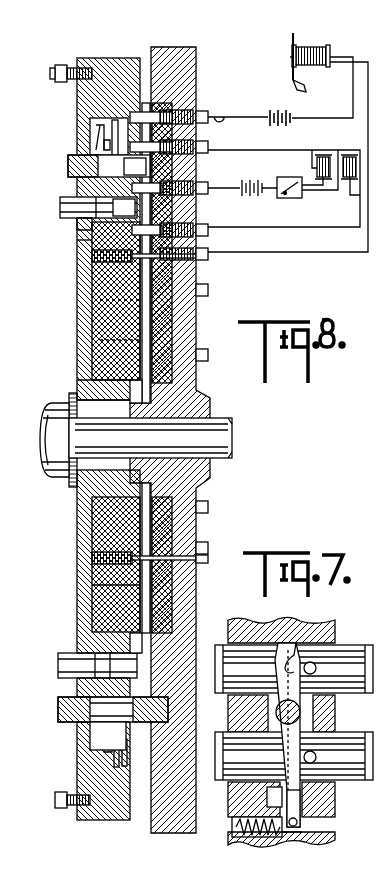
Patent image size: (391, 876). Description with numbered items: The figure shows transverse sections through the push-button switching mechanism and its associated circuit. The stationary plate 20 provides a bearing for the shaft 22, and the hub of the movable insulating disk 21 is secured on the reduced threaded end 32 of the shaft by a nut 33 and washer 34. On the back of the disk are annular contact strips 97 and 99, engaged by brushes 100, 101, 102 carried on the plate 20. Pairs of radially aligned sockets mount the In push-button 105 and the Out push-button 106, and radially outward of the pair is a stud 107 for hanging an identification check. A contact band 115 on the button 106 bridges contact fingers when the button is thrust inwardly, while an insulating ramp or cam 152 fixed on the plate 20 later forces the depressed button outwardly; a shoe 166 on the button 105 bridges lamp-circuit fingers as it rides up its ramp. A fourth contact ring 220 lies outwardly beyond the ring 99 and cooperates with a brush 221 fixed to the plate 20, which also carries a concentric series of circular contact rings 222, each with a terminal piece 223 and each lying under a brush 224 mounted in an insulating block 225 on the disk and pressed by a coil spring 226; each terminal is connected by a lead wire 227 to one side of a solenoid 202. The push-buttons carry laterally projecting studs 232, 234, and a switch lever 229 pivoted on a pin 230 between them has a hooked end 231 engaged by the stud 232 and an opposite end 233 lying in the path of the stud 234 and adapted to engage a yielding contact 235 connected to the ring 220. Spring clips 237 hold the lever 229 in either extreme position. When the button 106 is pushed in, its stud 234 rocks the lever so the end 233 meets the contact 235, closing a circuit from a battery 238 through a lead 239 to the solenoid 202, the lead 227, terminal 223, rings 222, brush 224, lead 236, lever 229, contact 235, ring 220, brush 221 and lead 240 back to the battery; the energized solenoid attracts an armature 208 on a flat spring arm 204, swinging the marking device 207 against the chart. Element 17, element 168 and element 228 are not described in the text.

In FIG. 8, the lower housing block 17 is at (72, 645).
In FIG. 8, the stationary plate 20 is at (197, 333).
In FIG. 8, the movable disk 21 is at (80, 356).
In FIG. 8, the shaft 22 is at (213, 433).
In FIG. 8, the reduced threaded end 32 is at (87, 431).
In FIG. 8, the nut 33 is at (50, 419).
In FIG. 8, the washer 34 is at (68, 399).
In FIG. 8, the annular contact strip 97 is at (80, 248).
In FIG. 8, the annular contact strip 99 is at (98, 128).
In FIG. 8, the brush 100 is at (208, 251).
In FIG. 8, the brush 101 is at (207, 190).
In FIG. 8, the brush 102 is at (199, 157).
In FIG. 8, the In push-button 105 is at (68, 222).
In FIG. 7, the In push-button 105 is at (367, 646).
In FIG. 8, the Out push-button 106 is at (68, 167).
In FIG. 7, the Out push-button 106 is at (368, 745).
In FIG. 8, the stud 107 is at (62, 65).
In FIG. 8, the contact band 115 is at (135, 166).
In FIG. 8, the ramp or cam 152 is at (172, 672).
In FIG. 8, the shoe 166 is at (206, 229).
In FIG. 8, the bolt head 168 is at (58, 80).
In FIG. 8, the solenoid 202 is at (318, 47).
In FIG. 8, the flat spring arm 204 is at (293, 39).
In FIG. 8, the marking device 207 is at (307, 90).
In FIG. 8, the armature 208 is at (292, 58).
In FIG. 8, the contact ring 220 is at (132, 110).
In FIG. 7, the contact ring 220 is at (232, 840).
In FIG. 8, the brush 221 is at (160, 112).
In FIG. 8, the circular contact rings 222 is at (148, 340).
In FIG. 8, the terminal piece 223 is at (205, 262).
In FIG. 8, the brush 224 is at (112, 268).
In FIG. 8, the insulating block 225 is at (95, 368).
In FIG. 8, the coil spring 226 is at (93, 272).
In FIG. 8, the lead wire 227 is at (368, 134).
In FIG. 7, the lever 228 is at (276, 643).
In FIG. 8, the switch lever 229 is at (90, 197).
In FIG. 7, the switch lever 229 is at (335, 702).
In FIG. 7, the pin 230 is at (276, 713).
In FIG. 8, the hooked end 231 is at (124, 207).
In FIG. 7, the hooked end 231 is at (297, 650).
In FIG. 8, the stud 232 is at (62, 210).
In FIG. 7, the stud 232 is at (316, 668).
In FIG. 8, the lever end 233 is at (100, 142).
In FIG. 7, the lever end 233 is at (300, 813).
In FIG. 8, the stud 234 is at (96, 158).
In FIG. 7, the stud 234 is at (316, 757).
In FIG. 8, the yielding contact 235 is at (112, 128).
In FIG. 7, the yielding contact 235 is at (327, 833).
In FIG. 8, the lead 236 is at (42, 244).
In FIG. 7, the spring clip 237 is at (267, 796).
In FIG. 8, the battery 238 is at (282, 106).
In FIG. 8, the lead 239 is at (345, 118).
In FIG. 8, the lead 240 is at (238, 127).